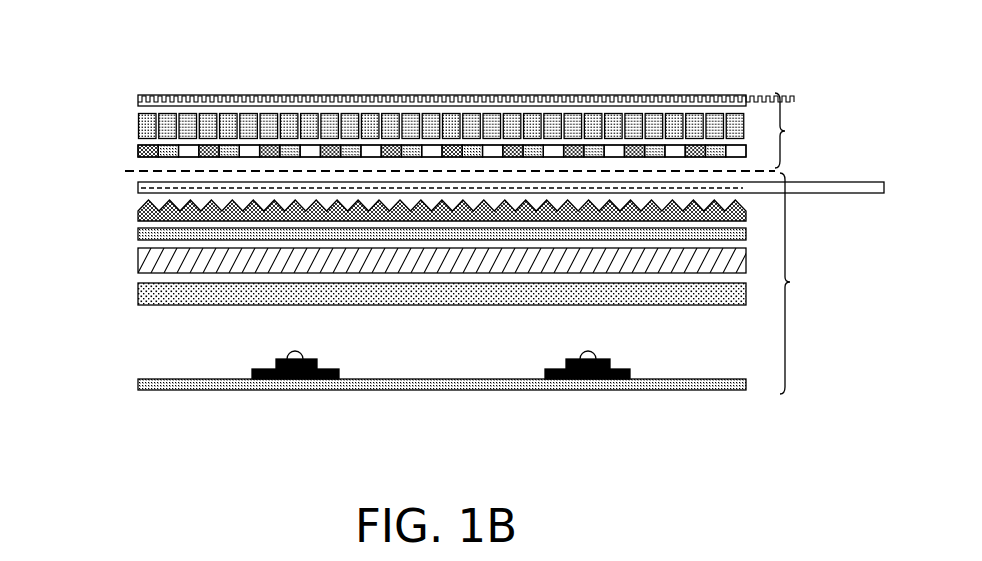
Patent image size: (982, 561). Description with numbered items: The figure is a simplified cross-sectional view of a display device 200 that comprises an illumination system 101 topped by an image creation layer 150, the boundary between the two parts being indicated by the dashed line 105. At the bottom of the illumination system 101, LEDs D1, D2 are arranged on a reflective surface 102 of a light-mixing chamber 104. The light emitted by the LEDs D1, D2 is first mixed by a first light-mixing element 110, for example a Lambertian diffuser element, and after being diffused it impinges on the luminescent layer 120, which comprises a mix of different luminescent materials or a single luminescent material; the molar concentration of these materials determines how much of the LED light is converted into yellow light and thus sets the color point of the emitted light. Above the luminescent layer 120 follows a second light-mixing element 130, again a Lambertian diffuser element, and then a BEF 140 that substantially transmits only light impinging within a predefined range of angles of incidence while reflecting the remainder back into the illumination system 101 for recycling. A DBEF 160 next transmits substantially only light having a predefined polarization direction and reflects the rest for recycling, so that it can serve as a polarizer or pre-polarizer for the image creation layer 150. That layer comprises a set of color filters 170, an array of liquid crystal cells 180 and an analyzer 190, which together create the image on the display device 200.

The display device 200 is at (743, 41).
The image creation layer 150 is at (785, 131).
The illumination system 101 is at (790, 282).
The analyzer 190 is at (148, 95).
The array of liquid crystal cells 180 is at (143, 120).
The set of color filters 170 is at (143, 150).
The interface between display panel and backlight unit 105 is at (117, 165).
The DBEF 160 is at (138, 188).
The BEF 140 is at (138, 210).
The second light-mixing element 130 is at (138, 236).
The luminescent layer 120 is at (145, 256).
The first light-mixing element 110 is at (160, 297).
The reflective surface 102 is at (680, 364).
The light-mixing chamber 104 is at (440, 357).
The LED D1 is at (318, 362).
The LED D2 is at (566, 363).